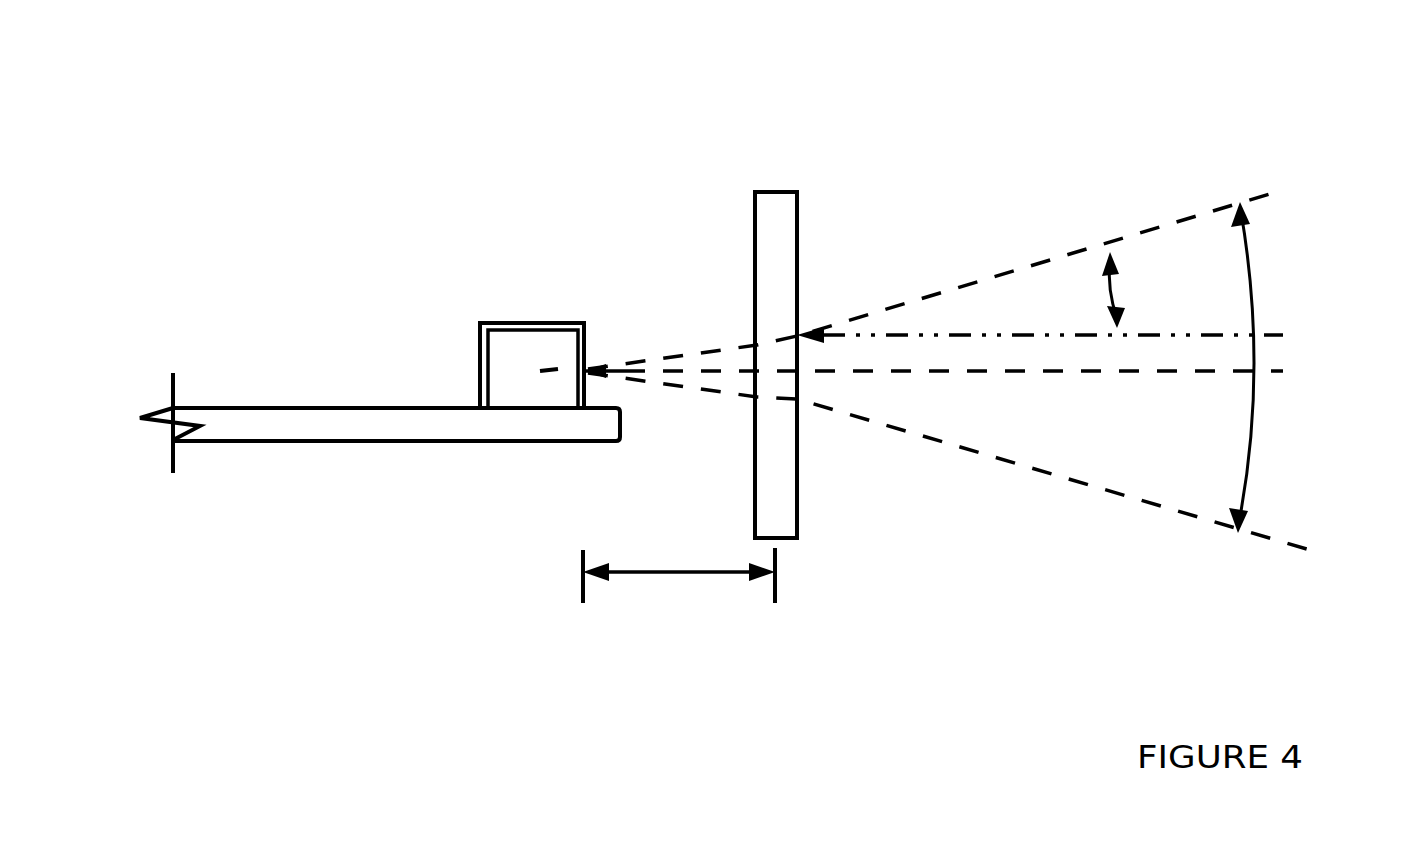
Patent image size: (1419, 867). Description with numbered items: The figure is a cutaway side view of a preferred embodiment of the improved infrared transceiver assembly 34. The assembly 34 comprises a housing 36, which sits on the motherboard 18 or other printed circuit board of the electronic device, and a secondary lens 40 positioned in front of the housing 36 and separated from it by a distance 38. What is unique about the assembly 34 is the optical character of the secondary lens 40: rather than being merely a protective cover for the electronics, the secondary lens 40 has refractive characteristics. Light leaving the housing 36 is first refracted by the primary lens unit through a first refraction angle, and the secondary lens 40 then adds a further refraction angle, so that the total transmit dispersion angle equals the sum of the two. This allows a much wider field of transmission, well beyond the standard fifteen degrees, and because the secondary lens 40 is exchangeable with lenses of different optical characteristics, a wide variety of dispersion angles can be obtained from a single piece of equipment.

The motherboard 18 is at (512, 442).
The improved transceiver assembly 34 is at (493, 240).
The housing 36 is at (475, 350).
The distance 38 is at (672, 575).
The secondary lens 40 is at (800, 465).